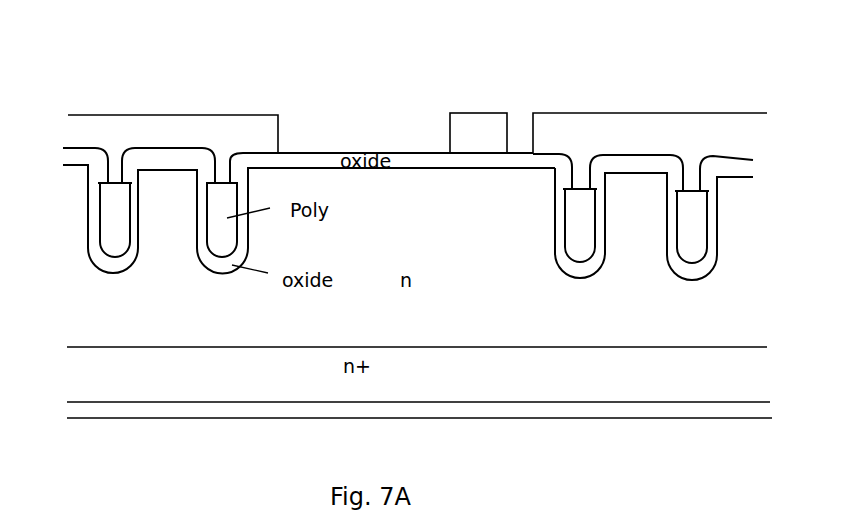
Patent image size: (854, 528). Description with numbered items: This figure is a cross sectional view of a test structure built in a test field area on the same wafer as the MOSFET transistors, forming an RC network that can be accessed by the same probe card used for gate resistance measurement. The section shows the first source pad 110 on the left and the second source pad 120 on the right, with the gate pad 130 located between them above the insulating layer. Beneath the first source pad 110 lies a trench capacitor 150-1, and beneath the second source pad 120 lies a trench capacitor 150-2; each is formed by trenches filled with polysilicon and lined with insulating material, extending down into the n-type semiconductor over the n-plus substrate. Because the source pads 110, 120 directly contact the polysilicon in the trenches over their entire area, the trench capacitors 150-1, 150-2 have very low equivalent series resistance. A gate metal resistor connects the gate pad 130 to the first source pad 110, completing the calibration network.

The first source pad 110 is at (176, 130).
The second source pad 120 is at (647, 132).
The gate pad 130 is at (468, 120).
The trench capacitor 150-1 is at (195, 258).
The trench capacitor 150-2 is at (658, 260).